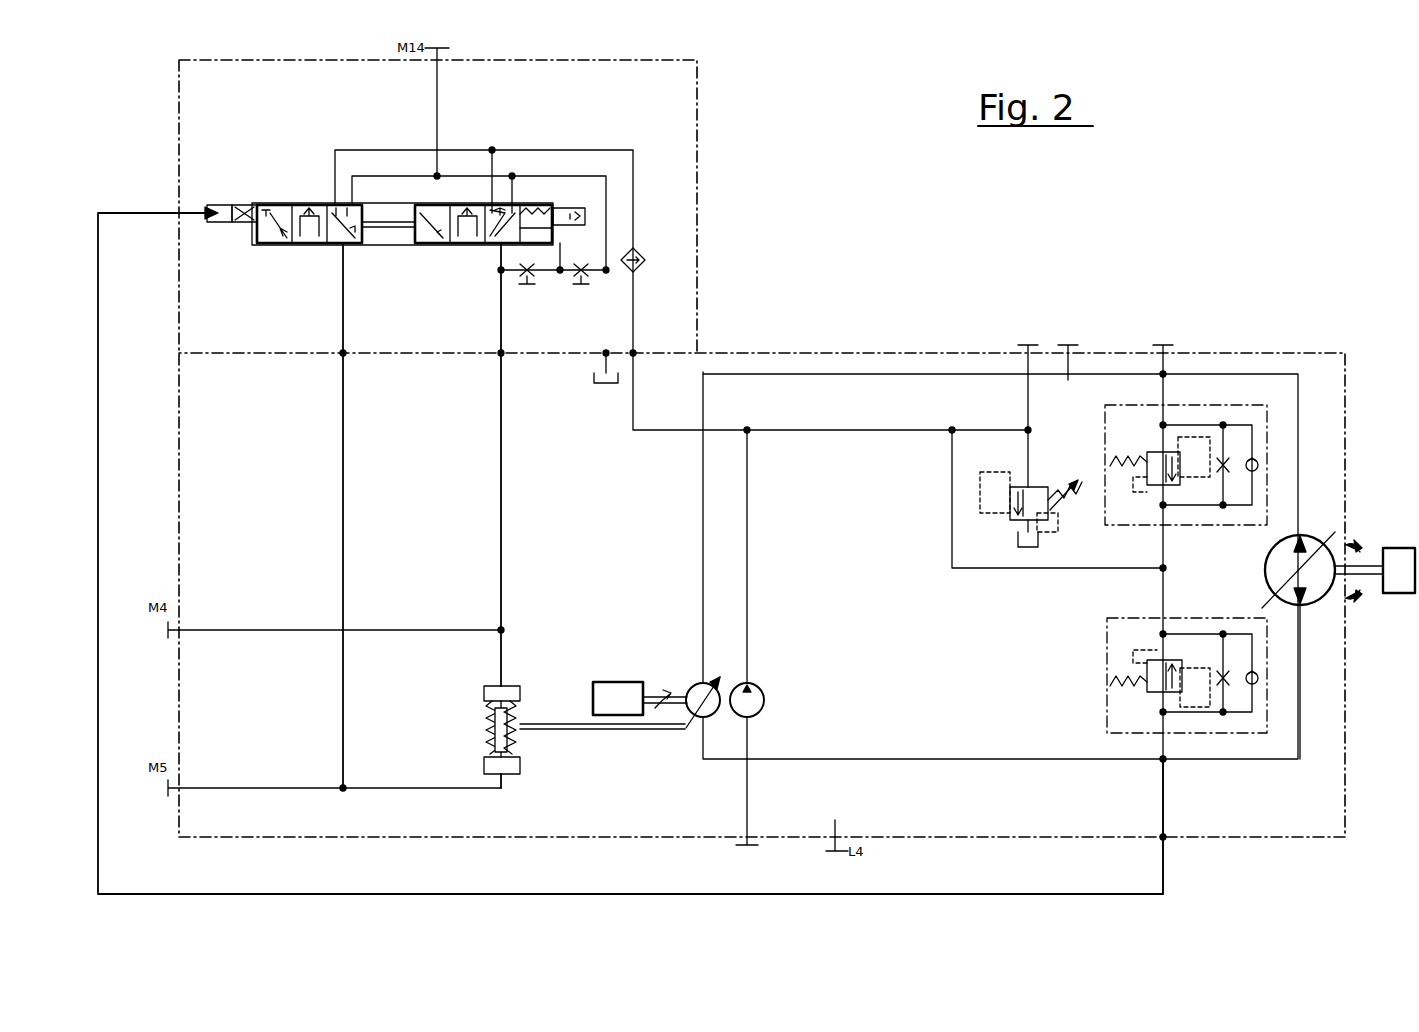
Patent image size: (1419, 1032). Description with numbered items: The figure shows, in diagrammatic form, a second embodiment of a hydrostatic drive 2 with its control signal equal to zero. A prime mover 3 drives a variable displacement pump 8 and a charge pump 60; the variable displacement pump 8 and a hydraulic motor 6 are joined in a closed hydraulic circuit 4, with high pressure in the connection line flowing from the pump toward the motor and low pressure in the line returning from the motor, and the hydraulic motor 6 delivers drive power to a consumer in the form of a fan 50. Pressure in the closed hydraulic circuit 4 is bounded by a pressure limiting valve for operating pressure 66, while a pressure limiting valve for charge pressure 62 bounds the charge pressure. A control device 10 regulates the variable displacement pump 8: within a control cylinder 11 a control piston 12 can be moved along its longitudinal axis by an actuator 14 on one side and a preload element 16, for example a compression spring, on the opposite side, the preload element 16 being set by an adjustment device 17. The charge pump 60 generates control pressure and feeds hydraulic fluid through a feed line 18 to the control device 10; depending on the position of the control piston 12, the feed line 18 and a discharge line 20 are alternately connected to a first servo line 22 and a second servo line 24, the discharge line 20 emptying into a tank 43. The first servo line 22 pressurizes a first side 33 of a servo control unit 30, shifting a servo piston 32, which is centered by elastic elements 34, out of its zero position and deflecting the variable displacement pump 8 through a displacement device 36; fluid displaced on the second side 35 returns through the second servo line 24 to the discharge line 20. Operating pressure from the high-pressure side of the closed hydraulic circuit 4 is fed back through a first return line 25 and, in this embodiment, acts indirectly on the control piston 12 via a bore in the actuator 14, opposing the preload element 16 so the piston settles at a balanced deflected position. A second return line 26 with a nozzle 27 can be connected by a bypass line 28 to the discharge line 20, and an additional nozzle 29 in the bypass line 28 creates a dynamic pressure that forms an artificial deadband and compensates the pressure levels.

The hydrostatic drive 2 is at (1135, 171).
The prime mover 3 is at (617, 690).
The closed hydraulic circuit 4 is at (1225, 374).
The hydraulic motor 6 is at (1282, 571).
The variable displacement pump 8 is at (692, 690).
The control device 10 is at (665, 200).
The control cylinder 11 is at (372, 245).
The control piston 12 is at (403, 228).
The actuator 14 is at (240, 205).
The preload element 16 is at (533, 213).
The adjustment device for preload element 17 is at (562, 214).
The feed line 18 is at (372, 150).
The discharge line for hydraulic fluid 20 is at (405, 176).
The first servo line 22 is at (343, 432).
The second servo line 24 is at (502, 514).
The first return line for operating pressure 25 is at (98, 296).
The second return line for operating pressure 26 is at (565, 248).
The nozzle 27 is at (527, 286).
The bypass line 28 is at (600, 270).
The nozzle 29 is at (582, 286).
The servo control unit 30 is at (472, 719).
The servo piston 32 is at (510, 741).
The first side of servo control unit 33 is at (520, 767).
The elastic elements 34 is at (490, 726).
The second side of servo control unit 35 is at (520, 688).
The displacement device 36 is at (607, 731).
The tank 43 is at (600, 390).
The consumer/fan 50 is at (1400, 555).
The charge pump 60 is at (765, 697).
The pressure limiting valve for charge pressure 62 is at (1000, 518).
The pressure limiting valve for operating pressure 66 is at (1130, 525).